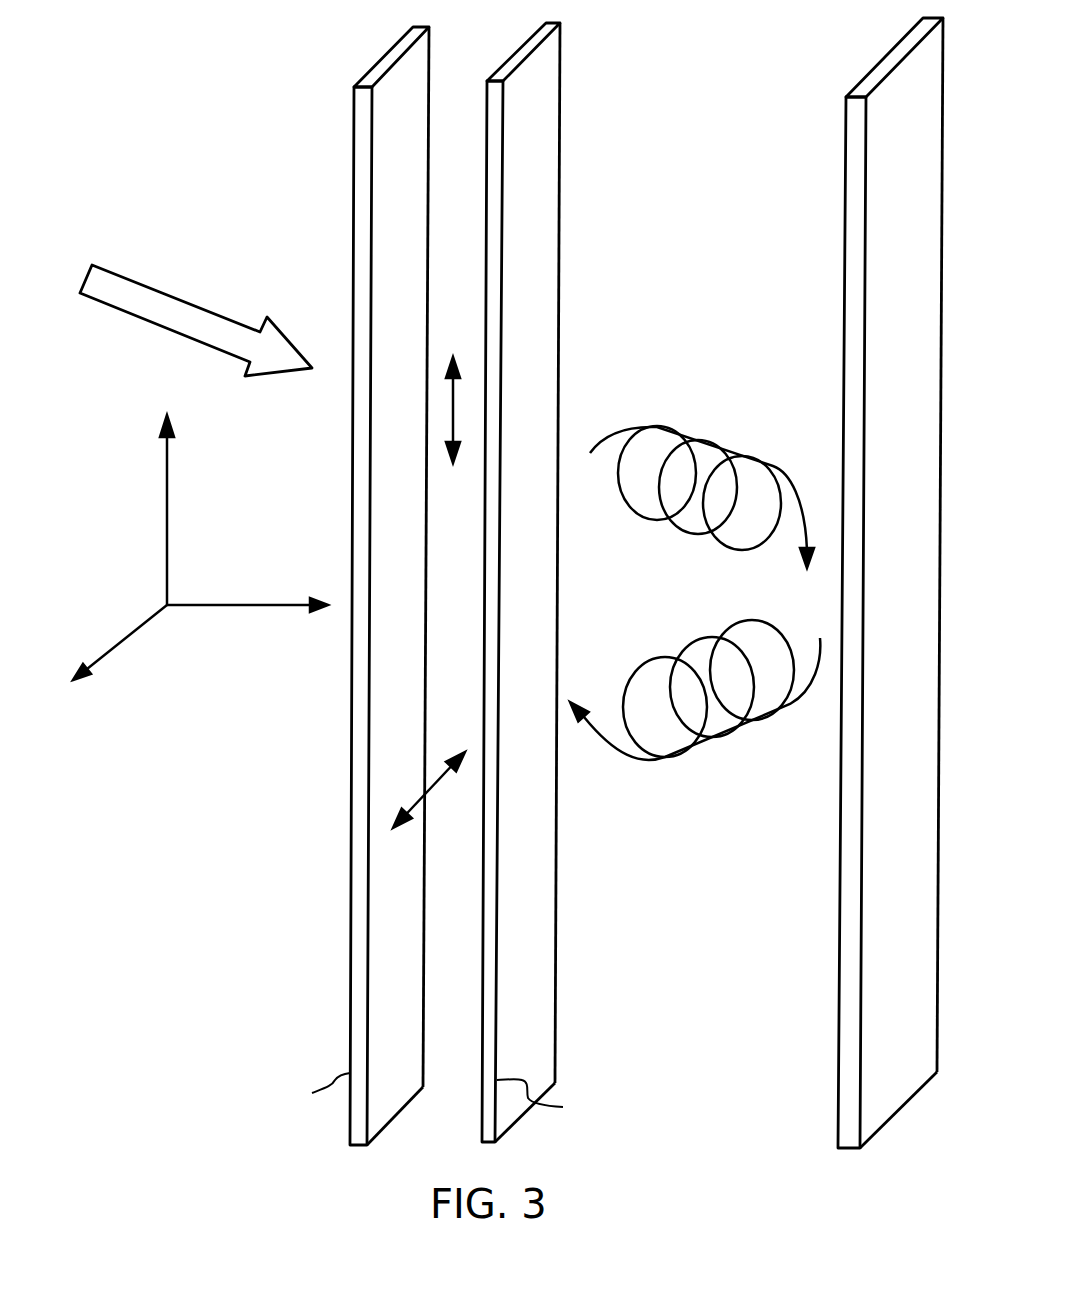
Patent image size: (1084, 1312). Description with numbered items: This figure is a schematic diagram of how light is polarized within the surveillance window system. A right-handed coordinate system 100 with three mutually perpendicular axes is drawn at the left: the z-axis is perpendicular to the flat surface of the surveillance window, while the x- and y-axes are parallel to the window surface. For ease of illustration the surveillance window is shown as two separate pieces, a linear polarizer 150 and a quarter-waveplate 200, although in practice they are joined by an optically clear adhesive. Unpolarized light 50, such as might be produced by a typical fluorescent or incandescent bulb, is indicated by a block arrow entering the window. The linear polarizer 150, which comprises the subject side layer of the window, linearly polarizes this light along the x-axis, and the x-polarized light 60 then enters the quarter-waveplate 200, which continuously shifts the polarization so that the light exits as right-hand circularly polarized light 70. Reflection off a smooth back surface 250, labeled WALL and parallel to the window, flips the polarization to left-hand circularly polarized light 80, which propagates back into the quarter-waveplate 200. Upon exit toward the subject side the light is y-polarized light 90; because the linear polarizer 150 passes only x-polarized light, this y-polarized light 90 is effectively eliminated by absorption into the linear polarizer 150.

The unpolarized light 50 is at (186, 302).
The x-polarized light 60 is at (457, 408).
The right-hand circularly polarized light 70 is at (723, 437).
The left-hand circularly polarized light 80 is at (723, 755).
The y-polarized light 90 is at (440, 782).
The coordinate system 100 is at (167, 537).
The linear polarizer 150 is at (354, 117).
The quarter-waveplate 200 is at (559, 78).
The back surface 250 is at (846, 145).